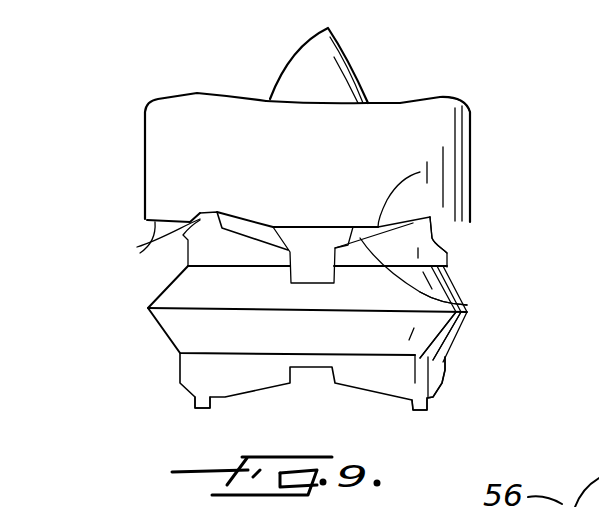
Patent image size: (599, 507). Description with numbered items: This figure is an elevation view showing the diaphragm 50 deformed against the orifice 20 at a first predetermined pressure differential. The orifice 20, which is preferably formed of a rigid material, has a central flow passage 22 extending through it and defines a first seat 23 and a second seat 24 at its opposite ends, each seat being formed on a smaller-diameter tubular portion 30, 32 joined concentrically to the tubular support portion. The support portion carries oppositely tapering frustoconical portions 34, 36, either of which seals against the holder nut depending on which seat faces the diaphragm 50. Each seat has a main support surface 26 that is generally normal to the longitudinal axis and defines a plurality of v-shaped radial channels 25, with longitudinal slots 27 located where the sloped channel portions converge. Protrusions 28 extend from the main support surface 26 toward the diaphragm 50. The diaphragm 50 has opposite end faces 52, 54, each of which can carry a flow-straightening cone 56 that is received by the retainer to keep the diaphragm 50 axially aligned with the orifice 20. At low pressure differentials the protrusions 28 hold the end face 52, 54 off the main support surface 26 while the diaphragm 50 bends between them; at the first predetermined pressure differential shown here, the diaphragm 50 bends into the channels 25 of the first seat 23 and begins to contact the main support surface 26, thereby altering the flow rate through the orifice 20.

The orifice 20 is at (148, 310).
The central flow passage 22 is at (310, 378).
The first seat 23 is at (183, 235).
The second seat 24 is at (226, 400).
The channels 25 is at (467, 305).
The main support surface 26 is at (420, 172).
The longitudinal slots 27 is at (290, 276).
The protrusions 28 is at (140, 253).
The tubular portion 30 is at (447, 255).
The tubular portion 32 is at (445, 372).
The first frustoconical portion 34 is at (462, 293).
The second frustoconical portion 36 is at (460, 333).
The diaphragm 50 is at (143, 131).
The end face 52 is at (443, 98).
The end face 54 is at (137, 247).
The flow-straightening cone 56 is at (292, 51).